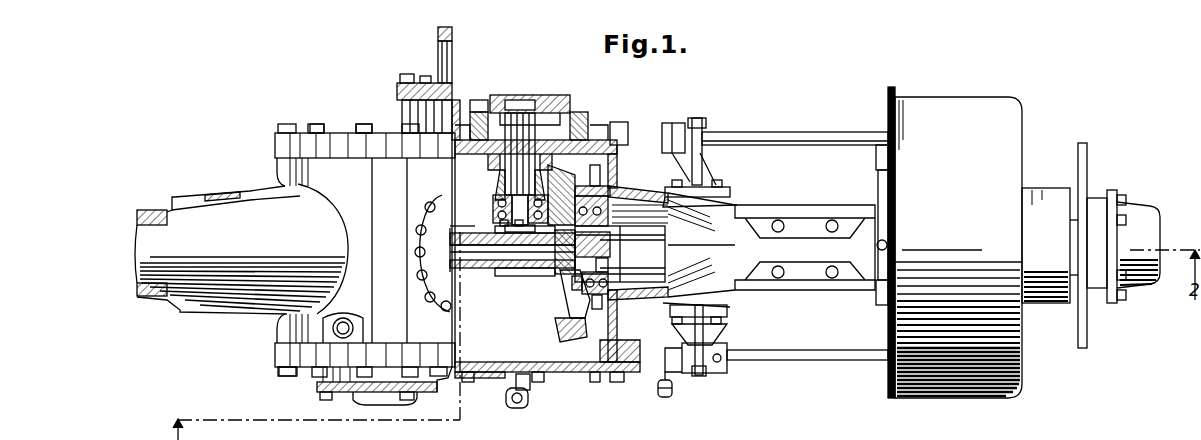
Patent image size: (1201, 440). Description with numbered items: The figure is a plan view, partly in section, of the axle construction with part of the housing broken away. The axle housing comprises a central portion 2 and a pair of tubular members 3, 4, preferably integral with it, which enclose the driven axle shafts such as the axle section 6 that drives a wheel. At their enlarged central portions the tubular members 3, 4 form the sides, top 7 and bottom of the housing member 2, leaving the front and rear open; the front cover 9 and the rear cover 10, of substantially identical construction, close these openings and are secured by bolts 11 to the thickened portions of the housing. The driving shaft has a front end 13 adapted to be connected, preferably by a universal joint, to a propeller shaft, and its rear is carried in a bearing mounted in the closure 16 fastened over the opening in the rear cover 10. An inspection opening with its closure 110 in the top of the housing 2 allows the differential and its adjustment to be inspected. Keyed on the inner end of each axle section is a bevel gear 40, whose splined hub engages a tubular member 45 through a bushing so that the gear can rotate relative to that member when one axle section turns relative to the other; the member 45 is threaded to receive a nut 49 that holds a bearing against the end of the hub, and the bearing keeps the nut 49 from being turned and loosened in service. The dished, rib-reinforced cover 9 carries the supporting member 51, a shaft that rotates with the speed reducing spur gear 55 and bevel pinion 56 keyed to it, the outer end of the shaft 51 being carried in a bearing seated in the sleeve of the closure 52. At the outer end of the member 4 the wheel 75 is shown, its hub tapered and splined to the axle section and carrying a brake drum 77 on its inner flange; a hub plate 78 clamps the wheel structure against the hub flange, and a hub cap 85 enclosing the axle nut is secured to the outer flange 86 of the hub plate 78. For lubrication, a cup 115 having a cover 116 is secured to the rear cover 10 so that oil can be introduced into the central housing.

The central portion 2 is at (365, 253).
The tubular member 3 is at (240, 250).
The tubular member 4 is at (773, 257).
The driven axle section 6 is at (621, 243).
The top 7 is at (448, 331).
The front cover 9 is at (372, 126).
The rear cover 10 is at (466, 380).
The bolts 11 is at (318, 124).
The front end 13 is at (438, 60).
The closure 16 is at (418, 393).
The bevel gear 40 is at (560, 330).
The tubular member 45 is at (478, 270).
The nut 49 is at (506, 270).
The supporting member 51 is at (503, 168).
The closure 52 is at (566, 108).
The spur gear 55 is at (490, 168).
The bevel pinion 56 is at (497, 186).
The wheel 75 is at (1072, 159).
The brake drum 77 is at (955, 242).
The hub plate 78 is at (1087, 333).
The hub cap 85 is at (1136, 211).
The outer flange 86 is at (1107, 190).
The closure 110 is at (430, 262).
The cup 115 is at (531, 384).
The cover 116 is at (522, 400).